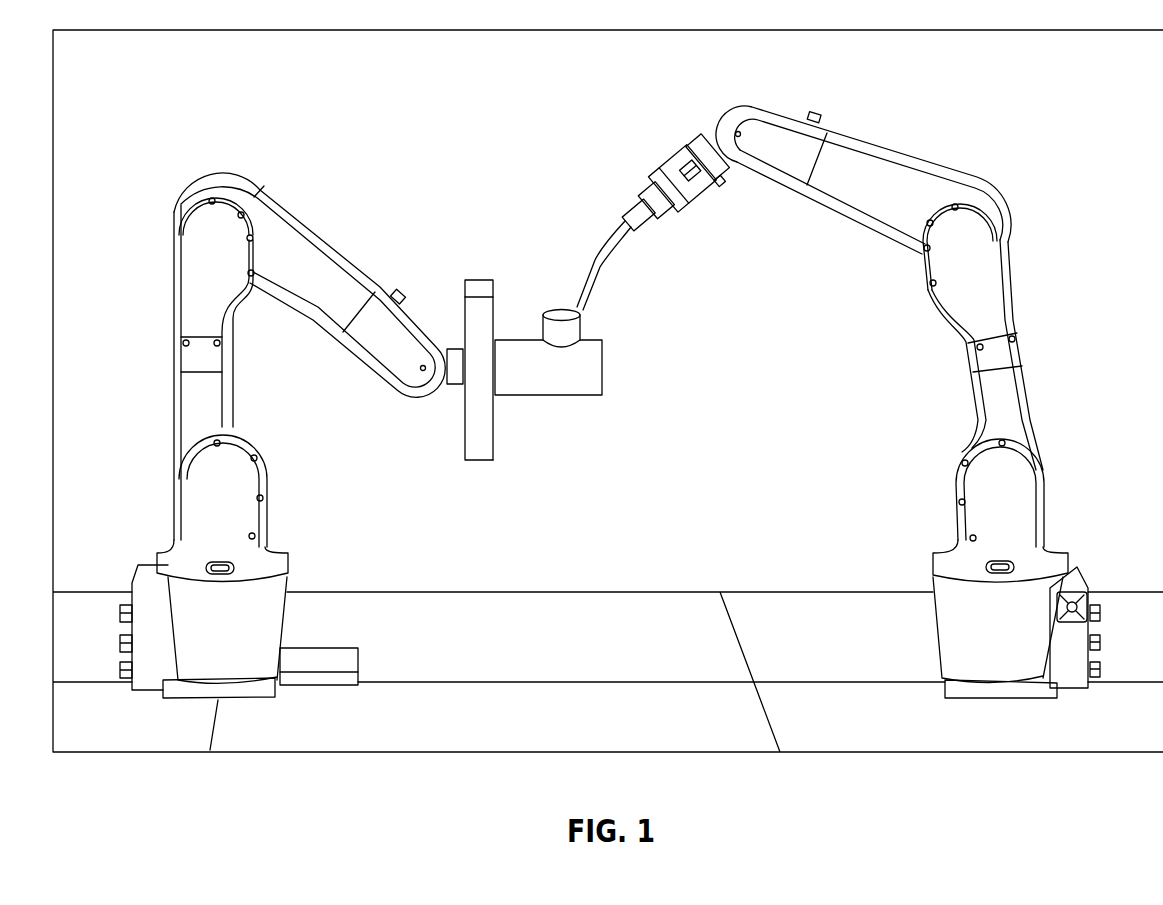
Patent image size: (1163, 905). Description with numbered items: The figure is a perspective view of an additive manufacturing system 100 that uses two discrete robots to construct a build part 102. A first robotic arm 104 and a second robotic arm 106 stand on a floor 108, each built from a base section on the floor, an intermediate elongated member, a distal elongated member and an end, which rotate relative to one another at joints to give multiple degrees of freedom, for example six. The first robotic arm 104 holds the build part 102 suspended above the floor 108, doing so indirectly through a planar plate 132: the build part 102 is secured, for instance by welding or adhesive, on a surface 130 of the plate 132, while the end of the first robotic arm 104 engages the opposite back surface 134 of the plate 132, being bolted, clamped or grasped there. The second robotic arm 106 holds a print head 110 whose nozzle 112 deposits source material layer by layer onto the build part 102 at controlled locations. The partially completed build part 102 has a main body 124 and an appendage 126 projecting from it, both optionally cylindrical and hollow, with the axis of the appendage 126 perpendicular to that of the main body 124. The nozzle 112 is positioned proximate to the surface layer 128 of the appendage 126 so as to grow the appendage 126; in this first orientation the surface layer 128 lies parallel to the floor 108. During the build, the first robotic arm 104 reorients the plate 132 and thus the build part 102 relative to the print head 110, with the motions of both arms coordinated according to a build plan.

The additive manufacturing system 100 is at (400, 98).
The build part 102 is at (588, 368).
The first robotic arm 104 is at (200, 247).
The second robotic arm 106 is at (942, 190).
The floor 108 is at (847, 720).
The print head 110 is at (677, 167).
The nozzle 112 is at (597, 263).
The main body 124 is at (557, 375).
The appendage 126 is at (543, 336).
The surface layer 128 is at (560, 308).
The surface 130 is at (495, 413).
The plate 132 is at (478, 318).
The back surface 134 is at (464, 432).